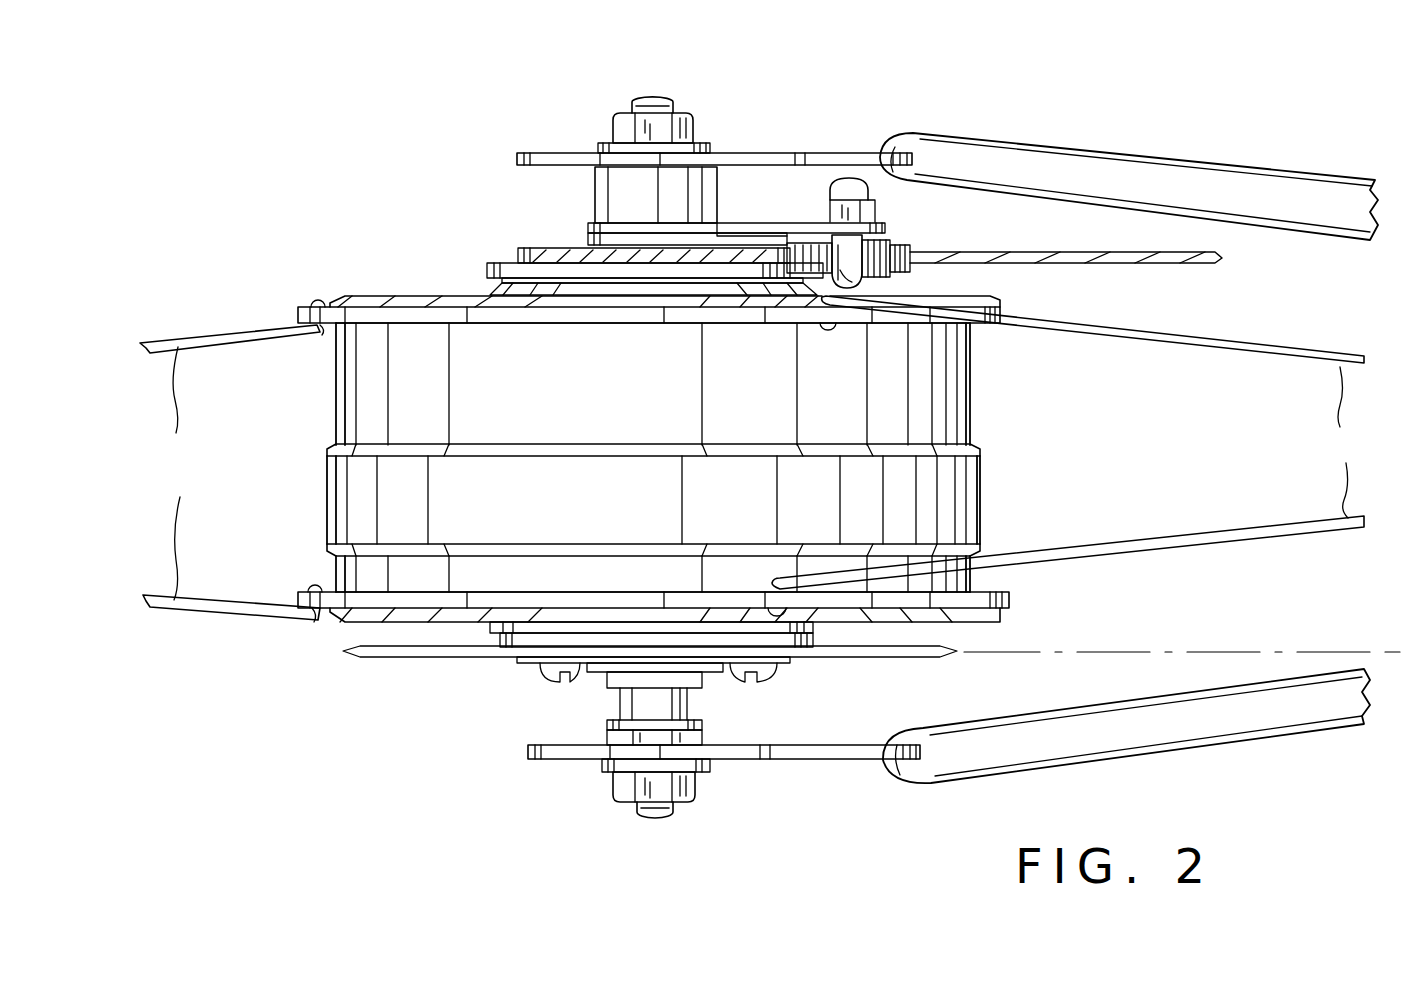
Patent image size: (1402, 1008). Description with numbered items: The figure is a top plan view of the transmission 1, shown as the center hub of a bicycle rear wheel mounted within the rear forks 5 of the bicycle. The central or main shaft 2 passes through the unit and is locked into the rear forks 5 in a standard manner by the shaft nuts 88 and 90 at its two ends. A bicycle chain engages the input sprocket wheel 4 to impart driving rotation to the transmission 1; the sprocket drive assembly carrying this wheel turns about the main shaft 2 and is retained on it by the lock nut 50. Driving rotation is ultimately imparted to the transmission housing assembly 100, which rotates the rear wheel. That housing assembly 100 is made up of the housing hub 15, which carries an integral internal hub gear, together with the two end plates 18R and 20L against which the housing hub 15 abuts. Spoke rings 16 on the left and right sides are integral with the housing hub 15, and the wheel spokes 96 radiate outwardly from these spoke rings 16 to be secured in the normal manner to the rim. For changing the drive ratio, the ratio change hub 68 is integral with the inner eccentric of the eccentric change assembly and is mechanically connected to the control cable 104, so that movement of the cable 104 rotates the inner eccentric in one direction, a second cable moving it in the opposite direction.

The transmission 1 is at (338, 265).
The main shaft 2 is at (673, 110).
The input sprocket wheel 4 is at (657, 68).
The rear forks 5 is at (1097, 150).
The housing hub 15 is at (968, 367).
The spoke rings 16 is at (1000, 302).
The end plate 18R is at (393, 617).
The end plate 20L is at (408, 298).
The lock nut 50 is at (681, 700).
The ratio change hub 68 is at (493, 266).
The shaft nut 88 is at (697, 783).
The shaft nut 90 is at (693, 130).
The spokes 96 is at (753, 459).
The transmission housing assembly 100 is at (323, 347).
The control cable 104 is at (1003, 250).